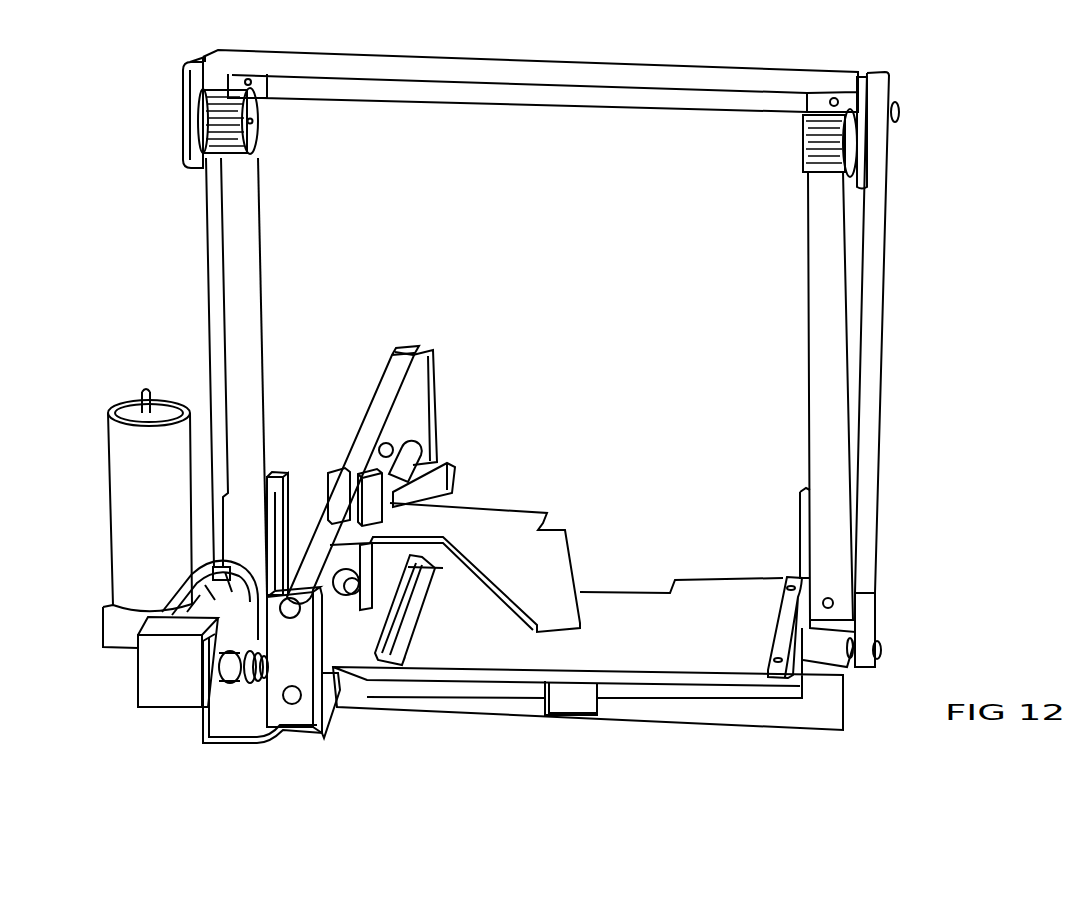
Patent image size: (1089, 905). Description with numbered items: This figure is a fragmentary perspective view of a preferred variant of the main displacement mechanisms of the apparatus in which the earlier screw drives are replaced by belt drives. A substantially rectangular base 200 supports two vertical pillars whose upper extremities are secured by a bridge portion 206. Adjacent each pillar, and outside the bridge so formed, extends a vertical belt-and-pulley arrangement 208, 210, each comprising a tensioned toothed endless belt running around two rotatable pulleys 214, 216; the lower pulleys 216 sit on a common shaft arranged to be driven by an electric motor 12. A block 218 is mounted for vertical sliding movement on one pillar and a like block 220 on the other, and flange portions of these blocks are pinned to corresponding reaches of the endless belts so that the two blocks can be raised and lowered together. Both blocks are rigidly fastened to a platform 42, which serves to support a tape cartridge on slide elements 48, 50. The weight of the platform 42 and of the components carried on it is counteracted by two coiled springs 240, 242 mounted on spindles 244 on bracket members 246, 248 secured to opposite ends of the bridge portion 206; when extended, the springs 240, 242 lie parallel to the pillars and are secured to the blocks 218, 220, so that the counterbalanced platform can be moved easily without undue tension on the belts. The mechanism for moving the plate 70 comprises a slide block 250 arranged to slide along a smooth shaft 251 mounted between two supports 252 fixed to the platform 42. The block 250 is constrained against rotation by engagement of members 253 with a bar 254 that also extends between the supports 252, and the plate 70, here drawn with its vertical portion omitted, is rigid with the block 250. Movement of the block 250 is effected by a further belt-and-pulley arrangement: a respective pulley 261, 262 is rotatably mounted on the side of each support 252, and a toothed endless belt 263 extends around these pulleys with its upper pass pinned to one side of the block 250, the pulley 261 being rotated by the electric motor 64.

The electric motor 12 is at (108, 452).
The platform 42 is at (640, 612).
The slide element 48 is at (780, 666).
The slide element 50 is at (405, 646).
The electric motor 64 is at (190, 600).
The plate 70 is at (555, 557).
The base 200 is at (683, 717).
The bridge portion 206 is at (683, 77).
The belt-and-pulley arrangement 208 is at (208, 302).
The belt-and-pulley arrangement 210 is at (878, 327).
The pulley 214 is at (900, 104).
The pulley 216 is at (883, 652).
The block 218 is at (285, 471).
The block 220 is at (803, 530).
The coiled spring 240 is at (250, 290).
The coiled spring 242 is at (830, 282).
The spindle 244 is at (258, 121).
The bracket member 246 is at (185, 94).
The bracket member 248 is at (865, 98).
The slide block 250 is at (378, 564).
The smooth shaft 251 is at (410, 466).
The support 252 is at (422, 398).
The member 253 is at (380, 509).
The bar 254 is at (382, 402).
The pulley 261 is at (238, 688).
The pulley 262 is at (420, 442).
The toothed endless belt 263 is at (260, 673).